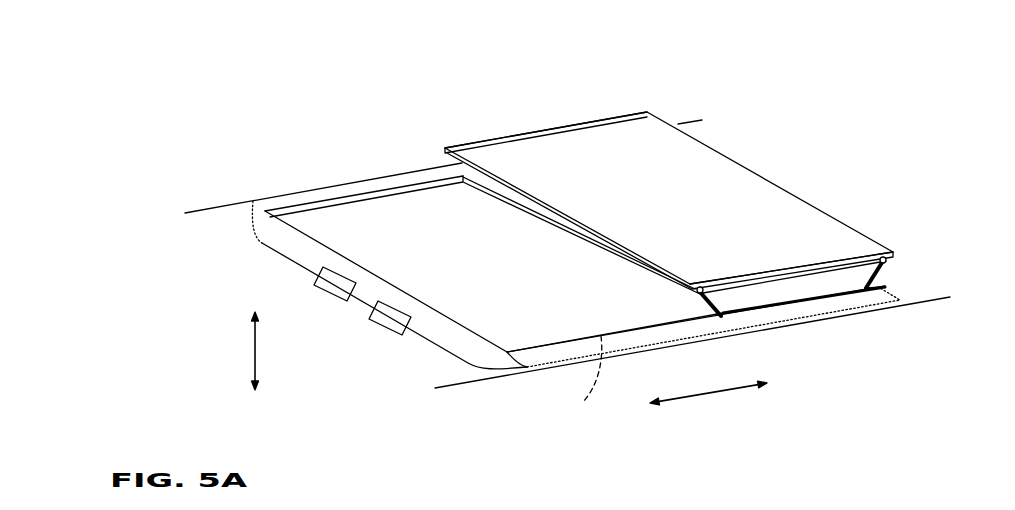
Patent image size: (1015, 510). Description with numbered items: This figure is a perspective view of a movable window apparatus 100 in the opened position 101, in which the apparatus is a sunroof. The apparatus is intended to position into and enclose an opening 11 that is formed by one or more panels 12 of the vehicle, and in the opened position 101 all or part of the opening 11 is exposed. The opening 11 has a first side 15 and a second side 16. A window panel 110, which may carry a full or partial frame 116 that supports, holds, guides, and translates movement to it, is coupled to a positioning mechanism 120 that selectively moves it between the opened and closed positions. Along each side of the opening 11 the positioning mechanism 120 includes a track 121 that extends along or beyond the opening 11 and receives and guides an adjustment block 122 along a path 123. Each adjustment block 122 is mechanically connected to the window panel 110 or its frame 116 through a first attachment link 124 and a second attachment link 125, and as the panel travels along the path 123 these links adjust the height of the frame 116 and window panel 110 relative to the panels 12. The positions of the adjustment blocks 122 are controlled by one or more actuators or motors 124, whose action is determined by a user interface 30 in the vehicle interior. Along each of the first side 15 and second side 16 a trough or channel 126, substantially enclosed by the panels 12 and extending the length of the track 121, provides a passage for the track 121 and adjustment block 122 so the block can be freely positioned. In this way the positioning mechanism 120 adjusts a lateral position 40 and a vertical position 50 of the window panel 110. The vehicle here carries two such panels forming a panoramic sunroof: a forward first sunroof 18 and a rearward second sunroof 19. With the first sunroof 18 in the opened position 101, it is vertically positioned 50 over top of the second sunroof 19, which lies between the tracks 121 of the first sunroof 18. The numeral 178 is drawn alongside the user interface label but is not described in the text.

The movable window apparatus 100 is at (582, 217).
The opened position 101 is at (874, 60).
The opening 11 is at (502, 247).
The panel 12 is at (223, 212).
The first side 15 is at (570, 338).
The second side 16 is at (370, 197).
The first sunroof 18 is at (632, 188).
The second sunroof 19 is at (813, 283).
The user interface 30 is at (364, 164).
The rear edge 178 is at (356, 164).
The lateral position 40 is at (727, 395).
The vertical position 50 is at (253, 348).
The window panel 110 is at (669, 172).
The frame 116 is at (555, 127).
The positioning mechanism 120 is at (685, 104).
The track 121 is at (532, 380).
The adjustment block 122 is at (752, 300).
The path 123 is at (532, 380).
The first attachment link 124 is at (377, 323).
The second attachment link 125 is at (703, 282).
The trough or channel 126 is at (532, 380).